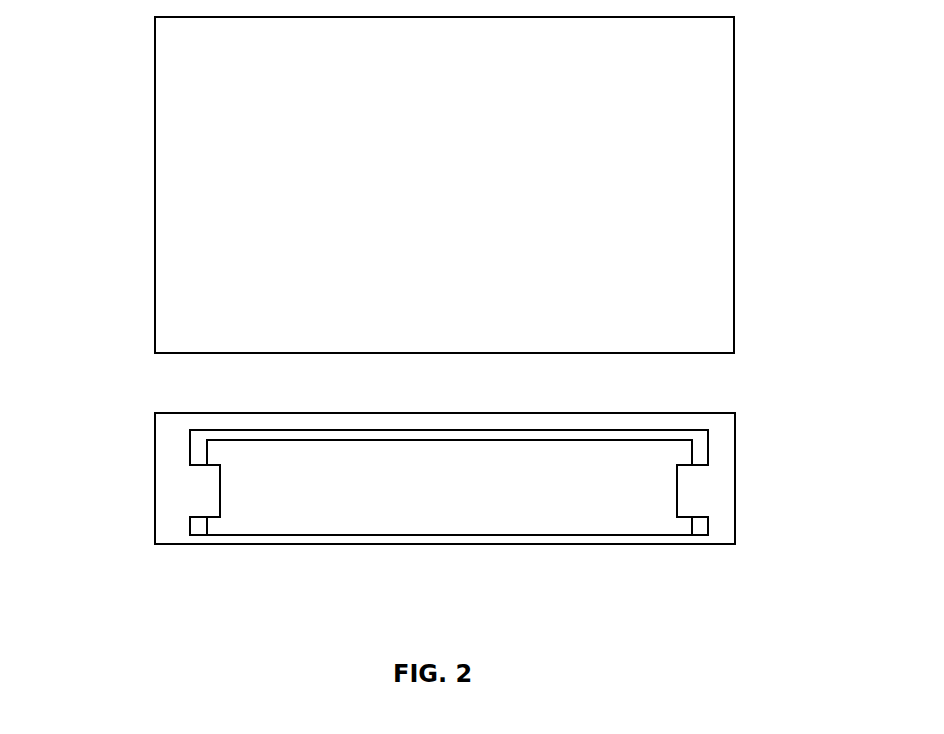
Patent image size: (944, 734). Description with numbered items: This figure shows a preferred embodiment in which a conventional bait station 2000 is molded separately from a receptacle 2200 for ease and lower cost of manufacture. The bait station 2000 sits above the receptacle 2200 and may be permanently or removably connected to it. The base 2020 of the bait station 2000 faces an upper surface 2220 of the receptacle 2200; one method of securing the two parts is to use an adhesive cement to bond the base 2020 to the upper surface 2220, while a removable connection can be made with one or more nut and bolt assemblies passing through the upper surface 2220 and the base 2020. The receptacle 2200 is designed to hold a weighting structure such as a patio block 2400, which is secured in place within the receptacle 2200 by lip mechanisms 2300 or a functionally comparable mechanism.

The bait station 2000 is at (738, 178).
The base 2020 is at (706, 359).
The receptacle 2200 is at (738, 485).
The upper surface 2220 is at (195, 407).
The lip mechanisms 2300 is at (185, 493).
The patio block 2400 is at (449, 487).